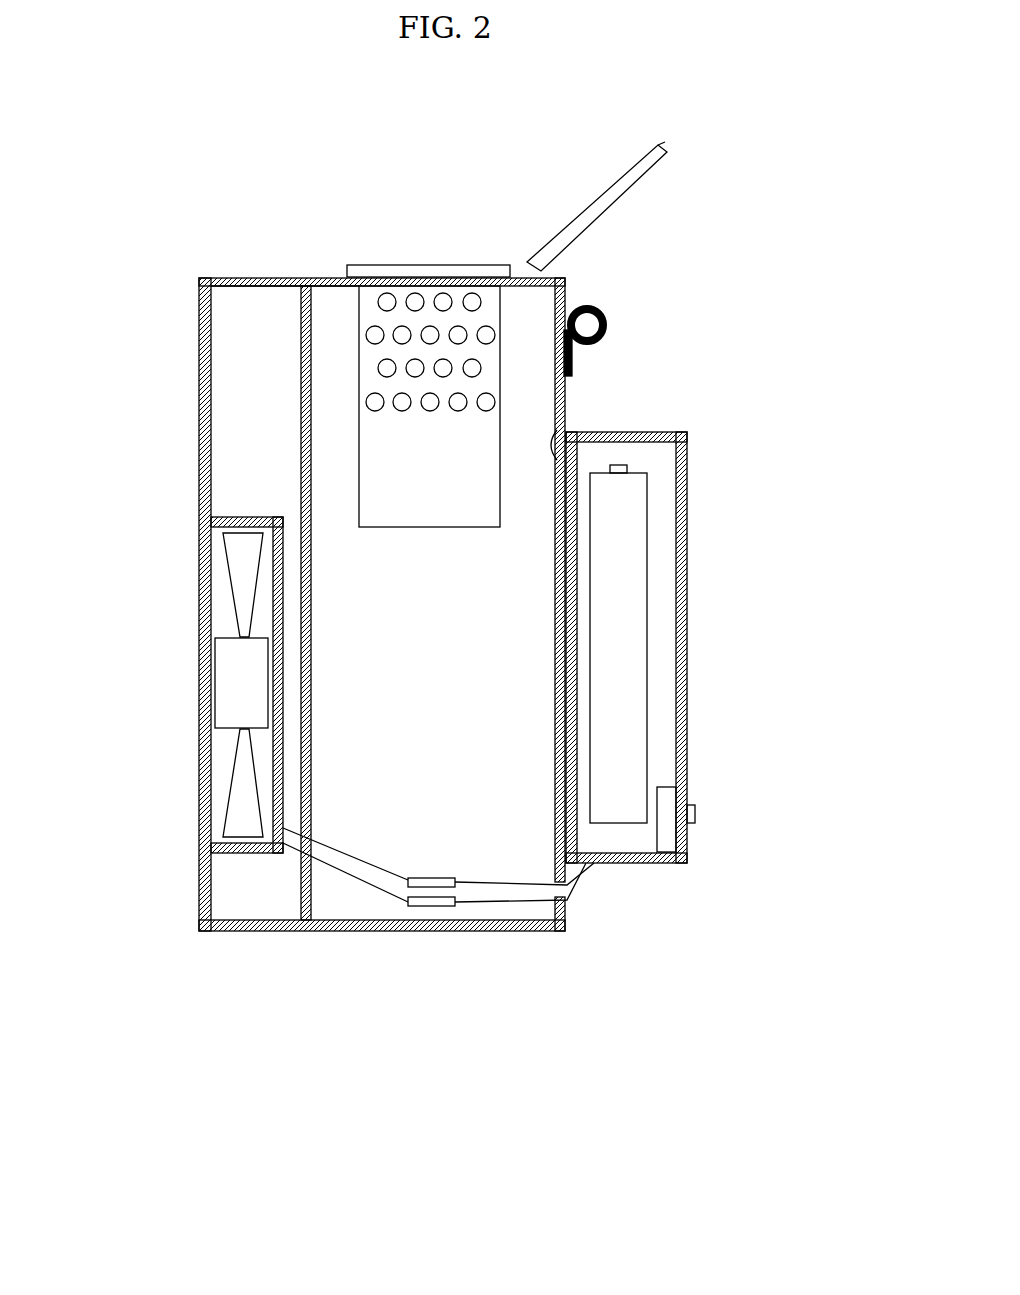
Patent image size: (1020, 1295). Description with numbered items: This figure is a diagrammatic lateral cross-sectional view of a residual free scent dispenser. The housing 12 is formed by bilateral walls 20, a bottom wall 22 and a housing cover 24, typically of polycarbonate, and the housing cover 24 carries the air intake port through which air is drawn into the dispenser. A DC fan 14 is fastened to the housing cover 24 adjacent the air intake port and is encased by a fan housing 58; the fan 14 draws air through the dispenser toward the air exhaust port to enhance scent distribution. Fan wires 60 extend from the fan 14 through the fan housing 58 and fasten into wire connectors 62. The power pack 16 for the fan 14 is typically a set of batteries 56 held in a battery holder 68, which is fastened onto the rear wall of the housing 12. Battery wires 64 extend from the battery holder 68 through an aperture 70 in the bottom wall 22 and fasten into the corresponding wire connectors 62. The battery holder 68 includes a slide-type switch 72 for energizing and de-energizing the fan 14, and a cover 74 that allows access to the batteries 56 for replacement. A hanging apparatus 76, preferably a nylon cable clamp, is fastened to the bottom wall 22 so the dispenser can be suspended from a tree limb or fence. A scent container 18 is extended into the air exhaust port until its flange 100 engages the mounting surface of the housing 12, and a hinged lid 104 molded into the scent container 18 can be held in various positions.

The housing 12 is at (388, 931).
The DC fan 14 is at (235, 675).
The power pack 16 is at (712, 491).
The scent container 18 is at (385, 265).
The bilateral walls 20 is at (258, 931).
The bottom wall 22 is at (567, 405).
The housing cover 24 is at (253, 343).
The batteries 56 is at (628, 738).
The fan housing 58 is at (257, 853).
The fan wires 60 is at (352, 862).
The wire connectors 62 is at (447, 887).
The battery wires 64 is at (527, 890).
The battery holder 68 is at (687, 552).
The aperture 70 is at (567, 900).
The switch 72 is at (697, 813).
The cover 74 is at (567, 420).
The hanging apparatus 76 is at (608, 322).
The flange 100 is at (347, 277).
The lid 104 is at (637, 180).